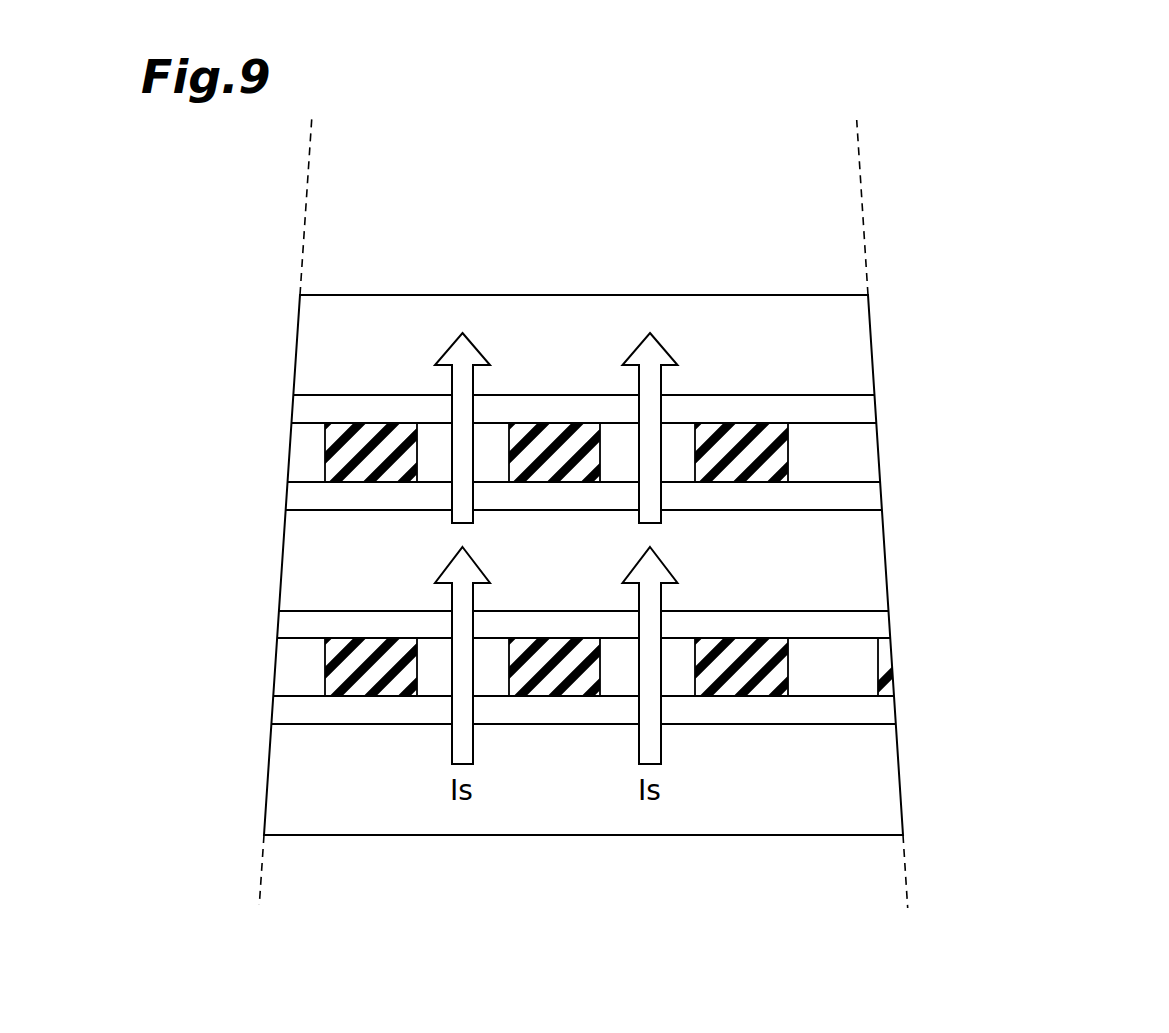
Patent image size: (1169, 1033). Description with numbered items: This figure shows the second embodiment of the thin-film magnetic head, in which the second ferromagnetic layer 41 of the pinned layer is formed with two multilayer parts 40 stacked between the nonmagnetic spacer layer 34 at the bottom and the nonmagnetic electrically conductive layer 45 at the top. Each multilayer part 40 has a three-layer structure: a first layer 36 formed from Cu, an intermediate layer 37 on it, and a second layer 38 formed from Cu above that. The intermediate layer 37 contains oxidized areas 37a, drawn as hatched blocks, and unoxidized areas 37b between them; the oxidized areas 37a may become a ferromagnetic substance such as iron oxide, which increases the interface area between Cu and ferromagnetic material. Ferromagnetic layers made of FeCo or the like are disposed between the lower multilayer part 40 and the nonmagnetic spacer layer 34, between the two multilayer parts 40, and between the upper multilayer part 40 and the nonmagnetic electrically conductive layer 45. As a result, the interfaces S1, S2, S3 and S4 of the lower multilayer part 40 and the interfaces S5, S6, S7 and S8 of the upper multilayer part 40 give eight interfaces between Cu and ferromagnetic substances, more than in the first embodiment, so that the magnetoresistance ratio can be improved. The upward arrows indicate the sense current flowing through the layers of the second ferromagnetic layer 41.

The nonmagnetic spacer layer 34 is at (906, 872).
The first layer 36 is at (882, 499).
The intermediate layer 37 is at (878, 453).
The oxidized area 37a is at (347, 437).
The unoxidized area 37b is at (437, 437).
The second layer 38 is at (875, 409).
The multilayer part 40 is at (1016, 382).
The second ferromagnetic layer 41 is at (1069, 835).
The nonmagnetic electrically conductive layer 45 is at (860, 148).
The interface S1 is at (282, 727).
The interface S2 is at (306, 697).
The interface S3 is at (292, 641).
The interface S4 is at (314, 612).
The interface S5 is at (304, 512).
The interface S6 is at (306, 483).
The interface S7 is at (304, 426).
The interface S8 is at (320, 396).